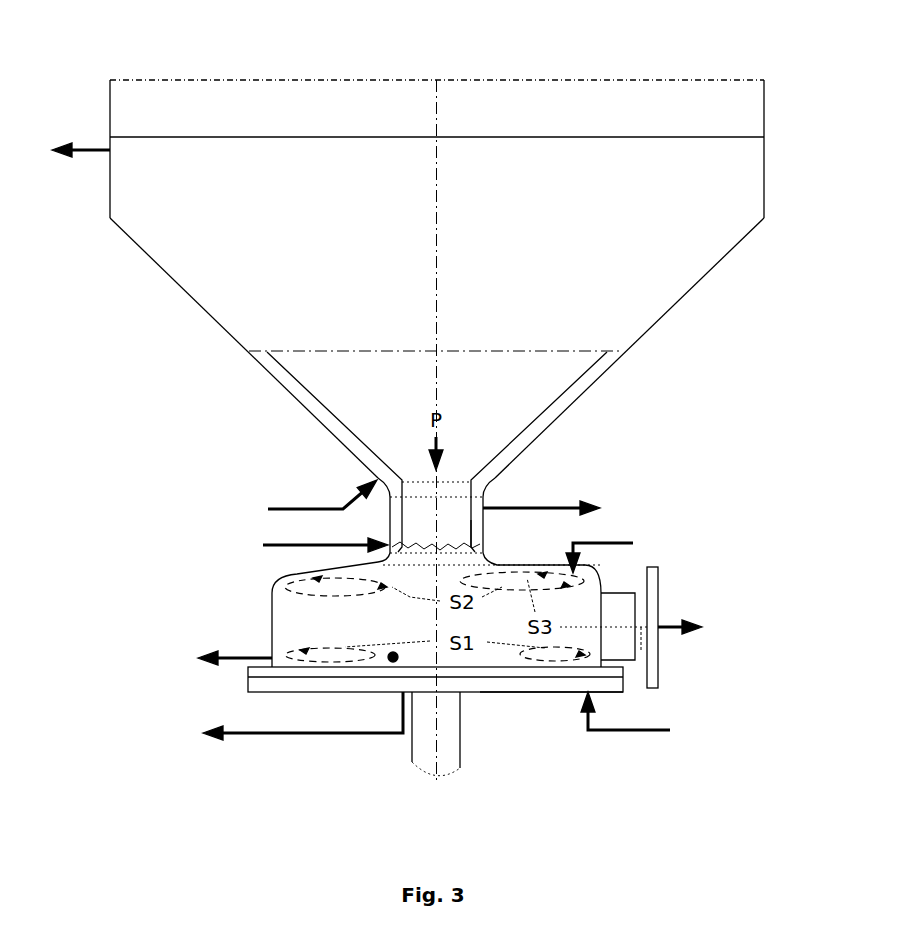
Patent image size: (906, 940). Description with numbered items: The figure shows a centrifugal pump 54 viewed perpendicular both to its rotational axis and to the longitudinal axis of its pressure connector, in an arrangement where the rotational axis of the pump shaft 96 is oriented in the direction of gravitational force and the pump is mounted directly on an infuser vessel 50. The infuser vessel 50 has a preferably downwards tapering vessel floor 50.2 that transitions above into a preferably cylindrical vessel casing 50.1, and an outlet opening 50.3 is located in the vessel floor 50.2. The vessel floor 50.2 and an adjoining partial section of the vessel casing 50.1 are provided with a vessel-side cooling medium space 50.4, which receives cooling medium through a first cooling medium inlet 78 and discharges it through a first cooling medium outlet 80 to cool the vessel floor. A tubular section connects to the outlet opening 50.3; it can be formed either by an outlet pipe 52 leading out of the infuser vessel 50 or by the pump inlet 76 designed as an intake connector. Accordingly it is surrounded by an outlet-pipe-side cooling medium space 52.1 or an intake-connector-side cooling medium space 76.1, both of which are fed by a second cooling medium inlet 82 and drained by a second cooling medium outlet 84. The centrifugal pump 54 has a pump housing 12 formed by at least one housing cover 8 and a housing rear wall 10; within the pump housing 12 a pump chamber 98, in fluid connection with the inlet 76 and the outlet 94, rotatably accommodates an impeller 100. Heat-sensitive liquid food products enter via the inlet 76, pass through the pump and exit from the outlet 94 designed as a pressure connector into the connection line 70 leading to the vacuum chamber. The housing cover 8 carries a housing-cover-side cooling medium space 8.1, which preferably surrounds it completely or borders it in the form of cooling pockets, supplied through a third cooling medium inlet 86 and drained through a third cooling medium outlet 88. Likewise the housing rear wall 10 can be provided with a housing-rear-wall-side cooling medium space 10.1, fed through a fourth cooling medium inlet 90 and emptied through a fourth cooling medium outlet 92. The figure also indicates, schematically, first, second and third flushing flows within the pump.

The housing cover 8 is at (323, 610).
The housing-cover-side cooling medium space 8.1 is at (273, 612).
The housing rear wall 10 is at (510, 713).
The housing-rear-wall-side cooling medium space 10.1 is at (607, 683).
The pump housing 12 is at (546, 706).
The infuser vessel 50 is at (438, 316).
The vessel casing 50.1 is at (699, 149).
The vessel floor 50.2 is at (539, 418).
The outlet opening 50.3 is at (445, 462).
The vessel-side cooling medium space 50.4 is at (334, 418).
The outlet pipe 52 is at (259, 478).
The outlet-pipe-side cooling medium space 52.1 is at (611, 509).
The centrifugal pump 54 is at (486, 733).
The connection line 70 is at (708, 627).
The inlet 76 is at (259, 478).
The intake-connector-side cooling medium space 76.1 is at (611, 509).
The first cooling medium inlet 78 is at (213, 486).
The first cooling medium outlet 80 is at (92, 150).
The second cooling medium inlet 82 is at (218, 534).
The second cooling medium outlet 84 is at (626, 471).
The third cooling medium inlet 86 is at (633, 543).
The third cooling medium outlet 88 is at (159, 674).
The fourth cooling medium inlet 90 is at (675, 749).
The fourth cooling medium outlet 92 is at (274, 746).
The outlet 94 is at (665, 642).
The pump shaft 96 is at (437, 742).
The pump chamber 98 is at (437, 617).
The impeller 100 is at (330, 628).